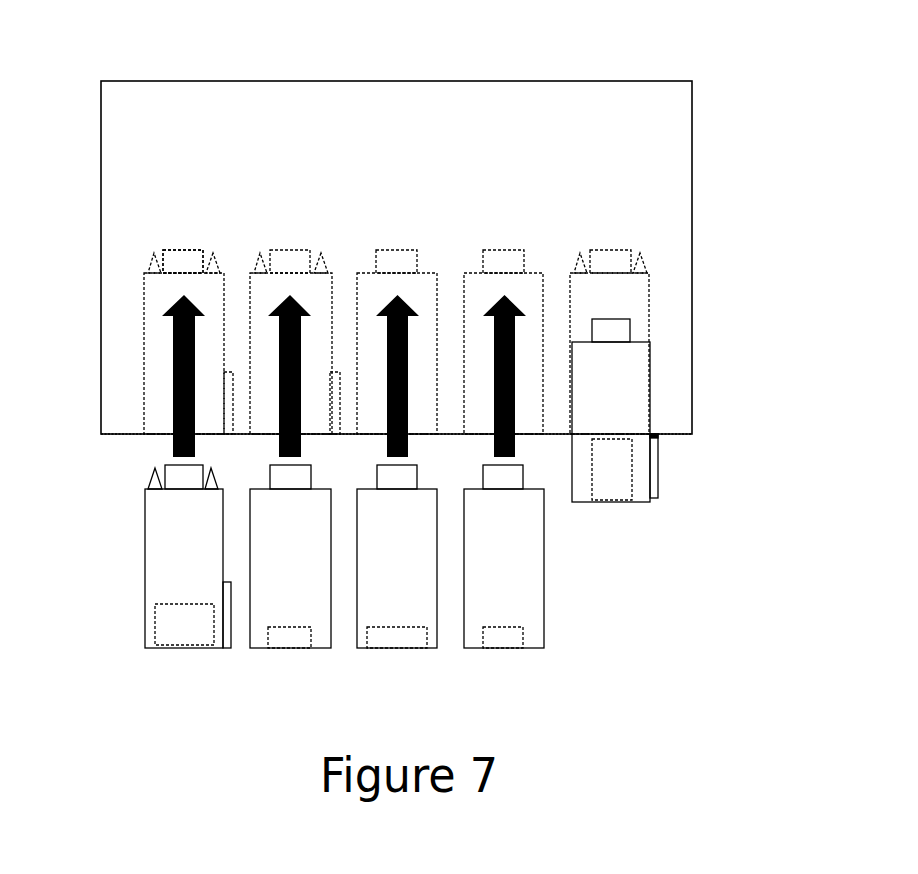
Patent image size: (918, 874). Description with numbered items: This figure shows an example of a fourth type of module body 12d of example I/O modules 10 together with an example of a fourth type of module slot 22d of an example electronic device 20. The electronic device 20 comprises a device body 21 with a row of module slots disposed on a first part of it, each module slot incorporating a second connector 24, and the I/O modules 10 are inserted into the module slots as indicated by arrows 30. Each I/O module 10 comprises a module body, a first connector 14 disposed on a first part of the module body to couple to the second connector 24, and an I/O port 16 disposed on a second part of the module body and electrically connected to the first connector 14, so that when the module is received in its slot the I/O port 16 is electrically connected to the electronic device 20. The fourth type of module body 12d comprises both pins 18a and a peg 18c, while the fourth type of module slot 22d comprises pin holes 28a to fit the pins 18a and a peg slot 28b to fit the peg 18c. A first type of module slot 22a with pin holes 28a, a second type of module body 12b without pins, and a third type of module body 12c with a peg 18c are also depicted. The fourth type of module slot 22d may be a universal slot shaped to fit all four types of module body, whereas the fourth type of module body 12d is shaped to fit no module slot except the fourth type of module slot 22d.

The I/O module 10 is at (135, 549).
The second type of module body 12b is at (323, 635).
The third type of module body 12c is at (638, 398).
The fourth type of module body 12d is at (155, 576).
The first connector 14 is at (173, 465).
The I/O port 16 is at (170, 621).
The pins 18a is at (152, 481).
The peg 18c is at (657, 498).
The electronic device 20 is at (101, 103).
The device body 21 is at (127, 184).
The first type of module slot 22a is at (638, 312).
The fourth type of module slot 22d is at (158, 352).
The second connector 24 is at (170, 250).
The pin holes 28a is at (150, 268).
The peg slot 28b is at (228, 372).
The arrows 30 is at (172, 410).